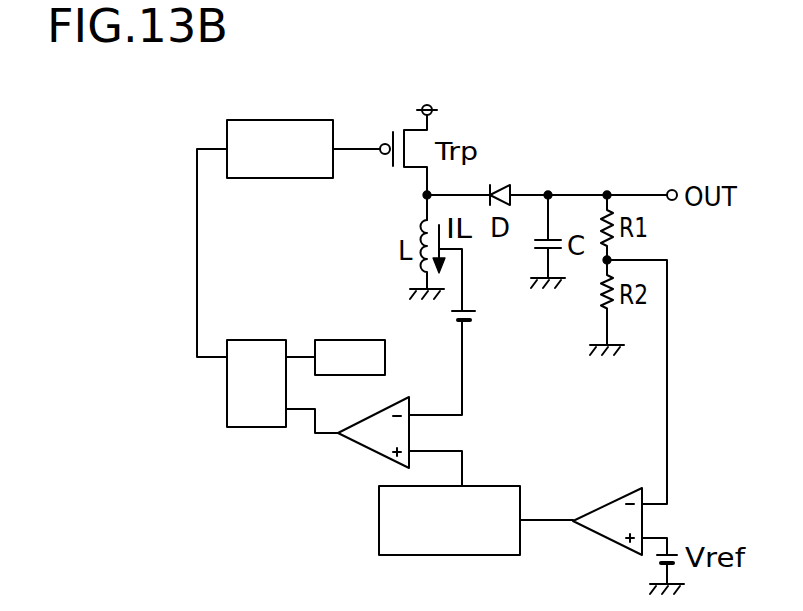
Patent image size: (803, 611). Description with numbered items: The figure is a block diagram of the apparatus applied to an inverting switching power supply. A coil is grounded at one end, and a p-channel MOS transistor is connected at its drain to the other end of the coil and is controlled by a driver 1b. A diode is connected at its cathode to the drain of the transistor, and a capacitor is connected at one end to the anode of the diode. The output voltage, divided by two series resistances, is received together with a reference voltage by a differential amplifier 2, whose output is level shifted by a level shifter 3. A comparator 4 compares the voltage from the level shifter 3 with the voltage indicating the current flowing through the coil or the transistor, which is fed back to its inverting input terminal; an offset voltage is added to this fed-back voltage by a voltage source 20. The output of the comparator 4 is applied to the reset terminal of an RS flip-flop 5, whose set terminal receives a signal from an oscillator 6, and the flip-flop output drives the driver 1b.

The driver 1b is at (279, 119).
The differential amplifier 2 is at (609, 500).
The level shifter 3 is at (378, 522).
The comparator 4 is at (376, 453).
The RS flip-flop 5 is at (258, 428).
The oscillator 6 is at (352, 340).
The voltage source 20 is at (452, 318).